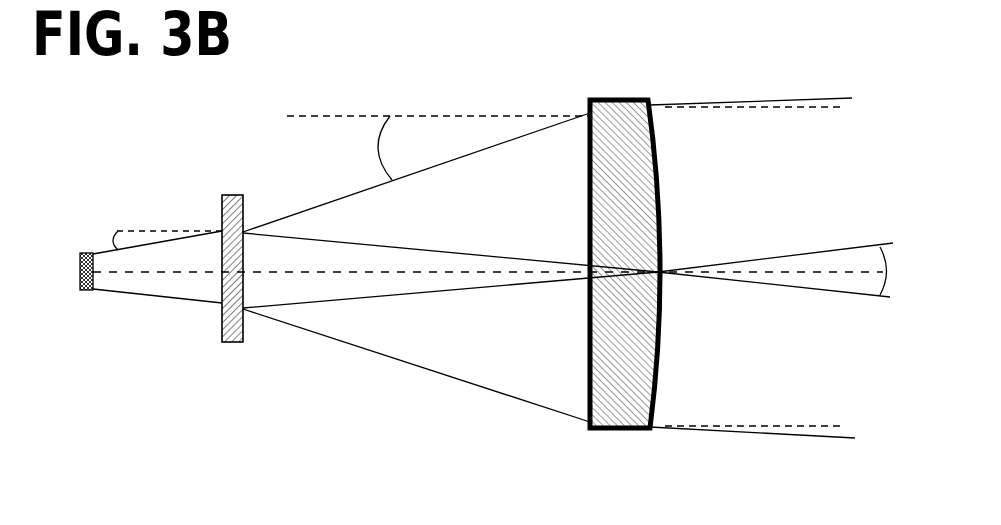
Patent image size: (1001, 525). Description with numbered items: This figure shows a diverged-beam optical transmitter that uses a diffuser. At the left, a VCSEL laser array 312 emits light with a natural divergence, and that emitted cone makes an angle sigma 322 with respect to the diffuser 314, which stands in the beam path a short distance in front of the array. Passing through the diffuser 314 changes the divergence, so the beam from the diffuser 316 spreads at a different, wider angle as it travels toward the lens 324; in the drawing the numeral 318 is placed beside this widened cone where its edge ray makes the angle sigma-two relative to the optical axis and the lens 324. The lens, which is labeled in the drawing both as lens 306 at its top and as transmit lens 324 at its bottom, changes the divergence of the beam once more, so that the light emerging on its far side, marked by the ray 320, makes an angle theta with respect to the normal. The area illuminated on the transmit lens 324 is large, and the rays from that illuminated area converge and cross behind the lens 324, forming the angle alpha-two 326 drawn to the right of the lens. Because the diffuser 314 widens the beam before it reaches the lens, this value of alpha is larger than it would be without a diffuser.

The lens 306 is at (616, 214).
The laser array 312 is at (135, 343).
The diffuser 314 is at (209, 221).
The beam from the diffuser 316 is at (517, 140).
The optical axis reference line for diffused beam angle 318 is at (415, 103).
The collimated output ray at angle theta 320 is at (835, 85).
The angle σ 322 is at (47, 217).
The lens 324 is at (711, 466).
The angle α2 326 is at (833, 220).